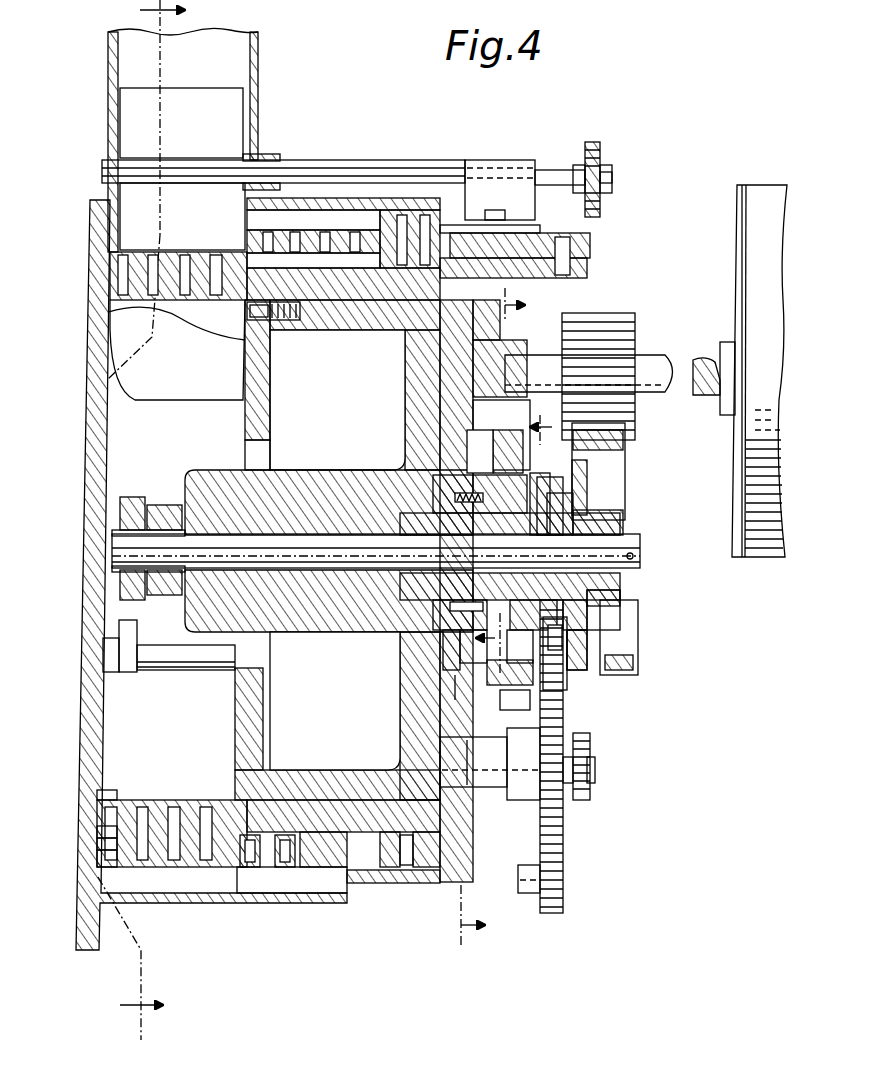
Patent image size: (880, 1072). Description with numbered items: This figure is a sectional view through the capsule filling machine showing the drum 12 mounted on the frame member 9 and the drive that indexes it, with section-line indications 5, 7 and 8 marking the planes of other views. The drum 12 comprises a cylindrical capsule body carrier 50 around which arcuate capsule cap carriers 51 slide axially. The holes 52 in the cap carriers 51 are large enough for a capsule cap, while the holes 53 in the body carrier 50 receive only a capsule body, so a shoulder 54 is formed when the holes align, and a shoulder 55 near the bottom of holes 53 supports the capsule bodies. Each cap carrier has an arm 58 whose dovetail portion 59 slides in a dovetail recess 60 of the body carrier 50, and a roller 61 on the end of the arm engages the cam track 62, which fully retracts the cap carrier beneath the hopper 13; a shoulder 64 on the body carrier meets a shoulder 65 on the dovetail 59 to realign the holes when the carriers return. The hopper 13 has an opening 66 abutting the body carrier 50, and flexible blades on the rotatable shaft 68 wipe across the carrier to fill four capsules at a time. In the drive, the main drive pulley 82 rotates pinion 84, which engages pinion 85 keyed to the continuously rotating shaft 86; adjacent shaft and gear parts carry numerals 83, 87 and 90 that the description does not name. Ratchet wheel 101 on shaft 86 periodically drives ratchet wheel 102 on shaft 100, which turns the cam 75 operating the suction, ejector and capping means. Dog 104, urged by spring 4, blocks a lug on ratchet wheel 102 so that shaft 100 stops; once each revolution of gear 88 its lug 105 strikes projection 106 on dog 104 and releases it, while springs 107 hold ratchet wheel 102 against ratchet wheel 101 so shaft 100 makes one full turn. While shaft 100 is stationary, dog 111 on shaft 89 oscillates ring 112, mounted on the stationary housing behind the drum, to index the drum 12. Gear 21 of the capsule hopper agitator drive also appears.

The spring 4 is at (455, 680).
The section line 5 is at (141, 520).
The section line 7 is at (482, 617).
The section line 8 is at (517, 545).
The frame member 9 is at (245, 425).
The drum 12 is at (80, 737).
The hopper 13 is at (108, 68).
The gear 21 is at (405, 338).
The capsule body carrier 50 is at (108, 270).
The capsule cap carriers 51 is at (105, 853).
The holes 52 is at (105, 842).
The holes 53 is at (105, 800).
The shoulder 54 is at (105, 832).
The shoulder 55 is at (95, 770).
The arm 58 is at (390, 220).
The dovetail portion 59 is at (540, 277).
The dovetail recess 60 is at (345, 265).
The roller 61 is at (592, 247).
The cam track 62 is at (525, 250).
The shoulder 64 is at (285, 322).
The shoulder 65 is at (355, 312).
The opening 66 is at (125, 246).
The rotatable shaft 68 is at (215, 180).
The cam 75 is at (158, 497).
The main drive pulley 82 is at (758, 248).
The shaft 83 is at (660, 370).
The pinion 84 is at (635, 335).
The pinion 85 is at (625, 460).
The rotatable shaft 86 is at (640, 552).
The bearing 87 is at (600, 610).
The gear 88 is at (563, 832).
The shaft 89 is at (600, 770).
The pinion 90 is at (590, 740).
The shaft 100 is at (360, 532).
The ratchet wheel 101 is at (600, 620).
The ratchet wheel 102 is at (600, 648).
The dog 104 is at (465, 650).
The lug 105 is at (525, 893).
The projection 106 is at (560, 688).
The springs 107 is at (400, 637).
The dog 111 is at (410, 718).
The ring 112 is at (497, 335).